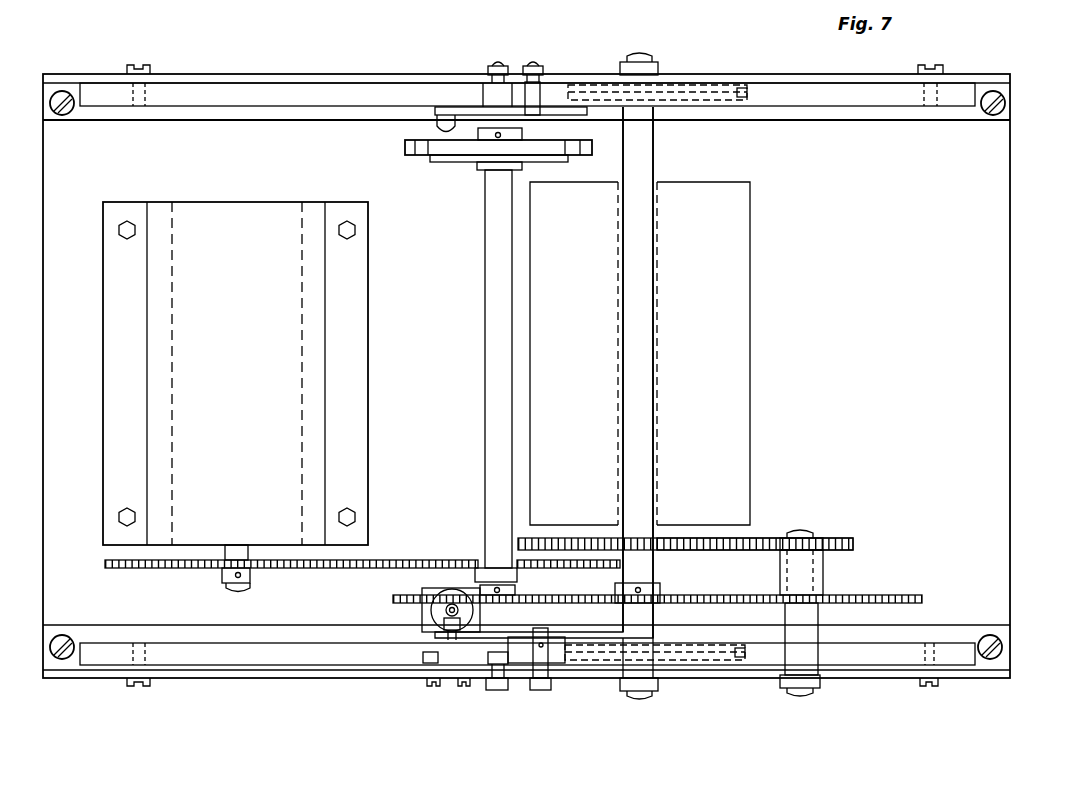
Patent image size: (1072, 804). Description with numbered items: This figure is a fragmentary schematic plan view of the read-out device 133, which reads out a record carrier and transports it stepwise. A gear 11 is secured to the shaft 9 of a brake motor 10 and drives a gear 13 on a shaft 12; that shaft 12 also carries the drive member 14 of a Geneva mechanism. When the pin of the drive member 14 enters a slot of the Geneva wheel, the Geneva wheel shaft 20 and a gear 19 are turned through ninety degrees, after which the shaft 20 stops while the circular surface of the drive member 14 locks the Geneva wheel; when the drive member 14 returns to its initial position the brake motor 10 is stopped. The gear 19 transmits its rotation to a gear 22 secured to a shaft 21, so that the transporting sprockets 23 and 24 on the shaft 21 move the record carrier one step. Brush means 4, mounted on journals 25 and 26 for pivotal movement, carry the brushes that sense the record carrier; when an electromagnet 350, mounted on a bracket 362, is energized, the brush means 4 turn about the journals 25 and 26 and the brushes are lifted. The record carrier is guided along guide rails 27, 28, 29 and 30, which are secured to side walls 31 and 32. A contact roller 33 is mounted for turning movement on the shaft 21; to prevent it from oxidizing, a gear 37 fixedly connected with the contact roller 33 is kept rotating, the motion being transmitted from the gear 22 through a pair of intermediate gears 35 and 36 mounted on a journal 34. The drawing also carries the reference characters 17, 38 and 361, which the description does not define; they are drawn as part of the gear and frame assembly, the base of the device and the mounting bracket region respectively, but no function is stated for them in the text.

The brush means 4 is at (591, 332).
The shaft 9 is at (233, 548).
The brake motor 10 is at (336, 530).
The gear 11 is at (235, 404).
The shaft 12 is at (470, 339).
The gear 13 is at (378, 568).
The drive member 14 is at (443, 150).
The gear wheel 17 is at (467, 146).
The gear 19 is at (458, 624).
The Geneva wheel shaft 20 is at (485, 475).
The shaft 21 is at (657, 118).
The gear 22 is at (665, 597).
The transporting sprocket 23 is at (718, 660).
The transporting sprocket 24 is at (742, 90).
The journal 25 is at (538, 660).
The journal 26 is at (538, 88).
The guide rail 27 is at (527, 683).
The guide rail 28 is at (248, 652).
The guide rail 29 is at (546, 70).
The guide rail 30 is at (957, 93).
The side wall 31 is at (526, 674).
The side wall 32 is at (545, 77).
The contact roller 33 is at (740, 493).
The journal 34 is at (810, 625).
The intermediate gear 35 is at (833, 605).
The intermediate gear 36 is at (717, 560).
The gear 37 is at (743, 550).
The base plate 38 is at (993, 605).
The read-out device 133 is at (873, 235).
The electromagnet 350 is at (427, 647).
The bracket 361 is at (446, 107).
The bracket 362 is at (428, 617).